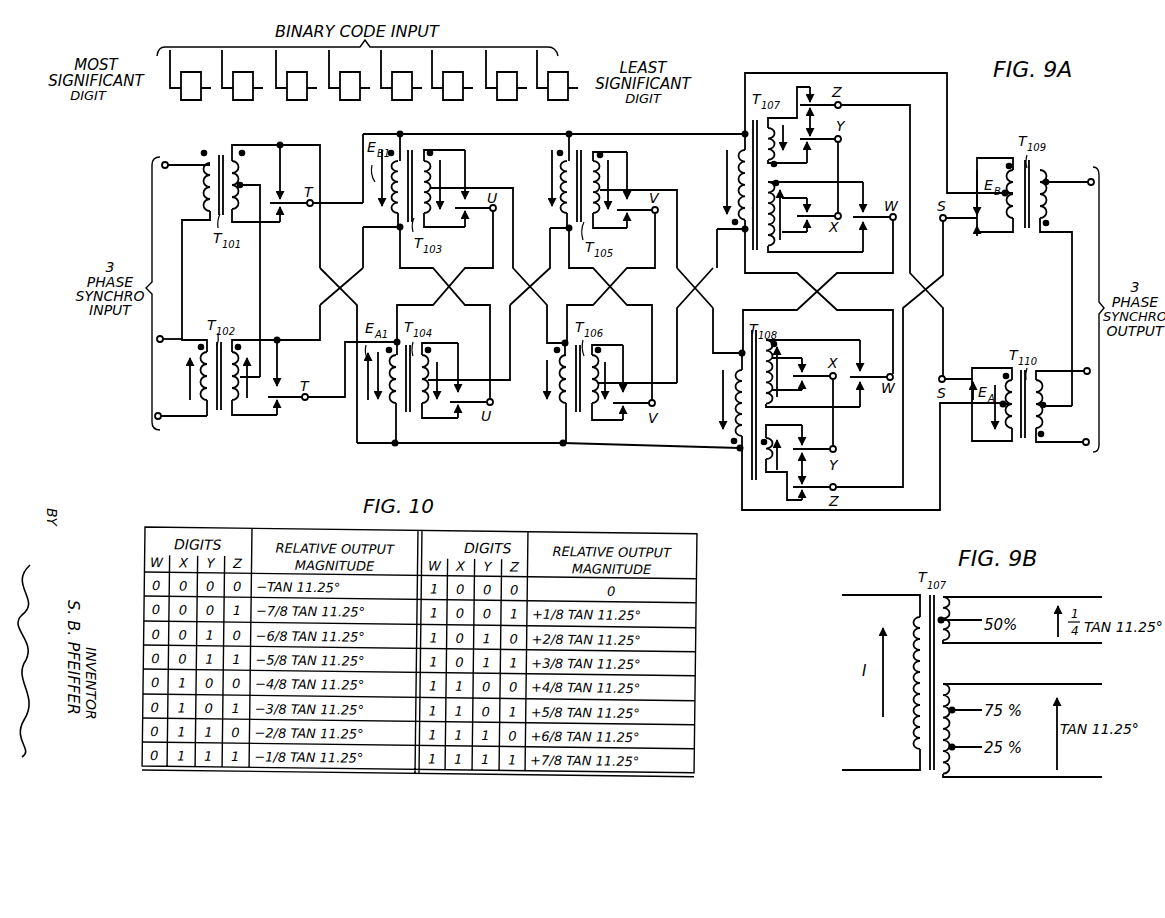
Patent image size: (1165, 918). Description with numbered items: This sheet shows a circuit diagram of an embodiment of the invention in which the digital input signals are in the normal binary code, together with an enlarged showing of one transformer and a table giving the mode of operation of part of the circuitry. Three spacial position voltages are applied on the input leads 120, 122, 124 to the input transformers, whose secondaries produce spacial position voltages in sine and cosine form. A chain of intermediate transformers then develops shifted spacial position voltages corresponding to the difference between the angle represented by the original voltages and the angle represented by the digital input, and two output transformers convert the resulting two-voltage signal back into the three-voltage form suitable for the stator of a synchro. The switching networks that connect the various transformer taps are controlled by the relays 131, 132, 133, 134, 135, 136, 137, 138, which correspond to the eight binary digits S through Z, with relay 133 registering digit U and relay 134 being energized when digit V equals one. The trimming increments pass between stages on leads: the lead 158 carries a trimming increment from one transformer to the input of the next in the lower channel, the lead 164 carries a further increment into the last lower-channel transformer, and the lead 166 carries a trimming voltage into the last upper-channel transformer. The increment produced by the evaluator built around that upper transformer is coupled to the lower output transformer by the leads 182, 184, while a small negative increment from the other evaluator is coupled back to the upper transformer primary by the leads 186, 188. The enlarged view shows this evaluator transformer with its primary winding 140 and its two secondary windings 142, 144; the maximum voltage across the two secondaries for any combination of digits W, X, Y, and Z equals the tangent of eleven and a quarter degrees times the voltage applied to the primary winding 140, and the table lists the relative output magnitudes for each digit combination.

In FIG. 9A, the input lead 120 is at (183, 165).
In FIG. 9A, the input lead 122 is at (172, 335).
In FIG. 9A, the input lead 124 is at (183, 414).
In FIG. 9A, the relay 131 is at (185, 100).
In FIG. 9A, the relay 132 is at (237, 100).
In FIG. 9A, the relay 133 is at (291, 100).
In FIG. 9A, the relay 134 is at (344, 100).
In FIG. 9A, the relay 135 is at (396, 100).
In FIG. 9A, the relay 136 is at (447, 100).
In FIG. 9A, the relay 137 is at (501, 100).
In FIG. 9A, the relay 138 is at (552, 100).
In FIG. 9A, the lead 158 is at (545, 312).
In FIG. 9A, the lead 164 is at (714, 333).
In FIG. 9A, the lead 166 is at (712, 262).
In FIG. 9A, the lead 182 is at (830, 280).
In FIG. 9A, the lead 184 is at (943, 328).
In FIG. 9A, the lead 186 is at (825, 310).
In FIG. 9A, the lead 188 is at (947, 262).
In FIG. 9B, the primary winding 140 is at (910, 720).
In FIG. 9B, the secondary winding 142 is at (953, 612).
In FIG. 9B, the secondary winding 144 is at (953, 702).